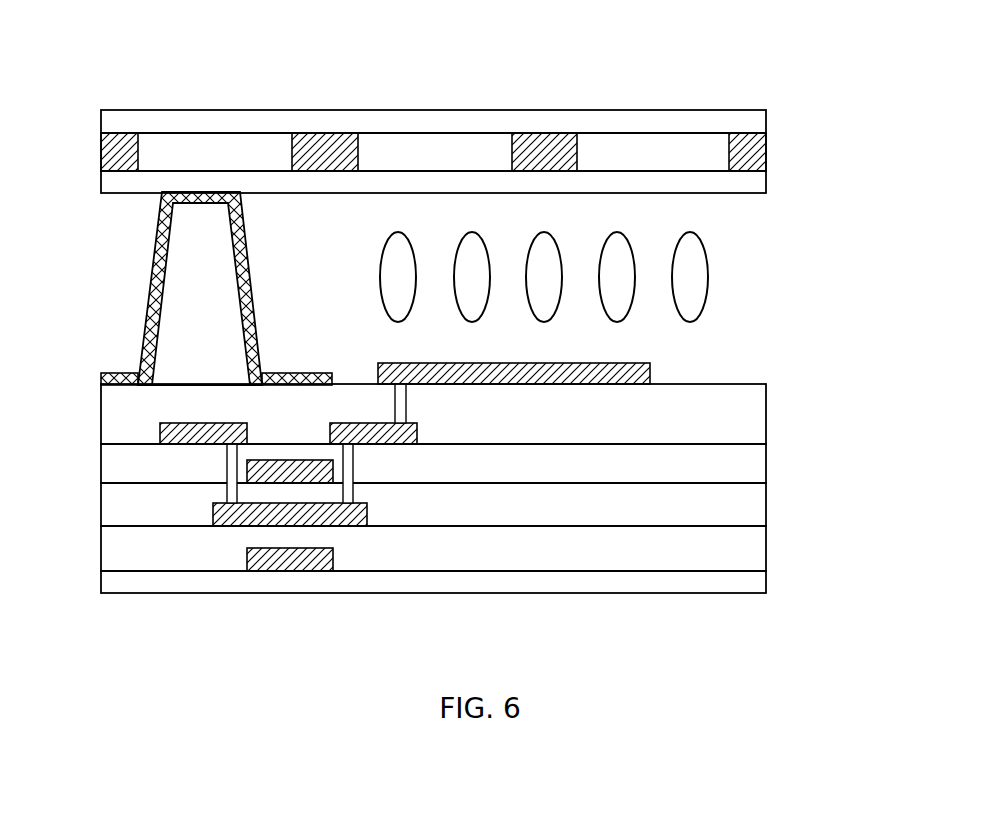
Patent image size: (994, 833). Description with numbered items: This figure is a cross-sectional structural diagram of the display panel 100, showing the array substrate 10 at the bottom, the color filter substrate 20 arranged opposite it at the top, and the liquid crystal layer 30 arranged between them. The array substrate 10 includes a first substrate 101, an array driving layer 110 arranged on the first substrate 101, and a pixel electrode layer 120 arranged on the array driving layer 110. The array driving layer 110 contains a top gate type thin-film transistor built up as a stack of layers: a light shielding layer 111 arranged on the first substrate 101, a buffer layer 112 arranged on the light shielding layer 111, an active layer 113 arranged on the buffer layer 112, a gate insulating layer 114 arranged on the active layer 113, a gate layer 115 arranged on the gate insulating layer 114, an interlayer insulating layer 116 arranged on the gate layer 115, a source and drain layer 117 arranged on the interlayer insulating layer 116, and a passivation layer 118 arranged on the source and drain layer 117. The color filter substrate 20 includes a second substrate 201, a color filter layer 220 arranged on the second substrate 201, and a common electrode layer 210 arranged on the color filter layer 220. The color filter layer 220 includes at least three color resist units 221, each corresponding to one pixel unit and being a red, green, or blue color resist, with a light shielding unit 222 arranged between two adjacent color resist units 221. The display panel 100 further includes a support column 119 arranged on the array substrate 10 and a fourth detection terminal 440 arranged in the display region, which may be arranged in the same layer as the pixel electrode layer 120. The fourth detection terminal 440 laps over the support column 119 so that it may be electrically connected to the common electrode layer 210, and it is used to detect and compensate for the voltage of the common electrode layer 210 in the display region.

The display panel 100 is at (142, 46).
The color filter substrate 20 is at (518, 127).
The second substrate 201 is at (770, 127).
The color filter layer 220 is at (478, 113).
The color resist unit 221 is at (215, 150).
The light shielding unit 222 is at (321, 150).
The common electrode layer 210 is at (478, 185).
The fourth detection terminal 440 is at (160, 272).
The support column 119 is at (180, 325).
The liquid crystal layer 30 is at (873, 222).
The array substrate 10 is at (476, 508).
The pixel electrode layer 120 is at (619, 392).
The passivation layer 118 is at (740, 411).
The interlayer insulating layer 116 is at (740, 471).
The gate insulating layer 114 is at (740, 514).
The buffer layer 112 is at (740, 556).
The first substrate 101 is at (740, 589).
The array driving layer 110 is at (438, 514).
The light shielding layer 111 is at (260, 563).
The active layer 113 is at (223, 515).
The gate layer 115 is at (325, 473).
The source and drain layer 117 is at (383, 437).